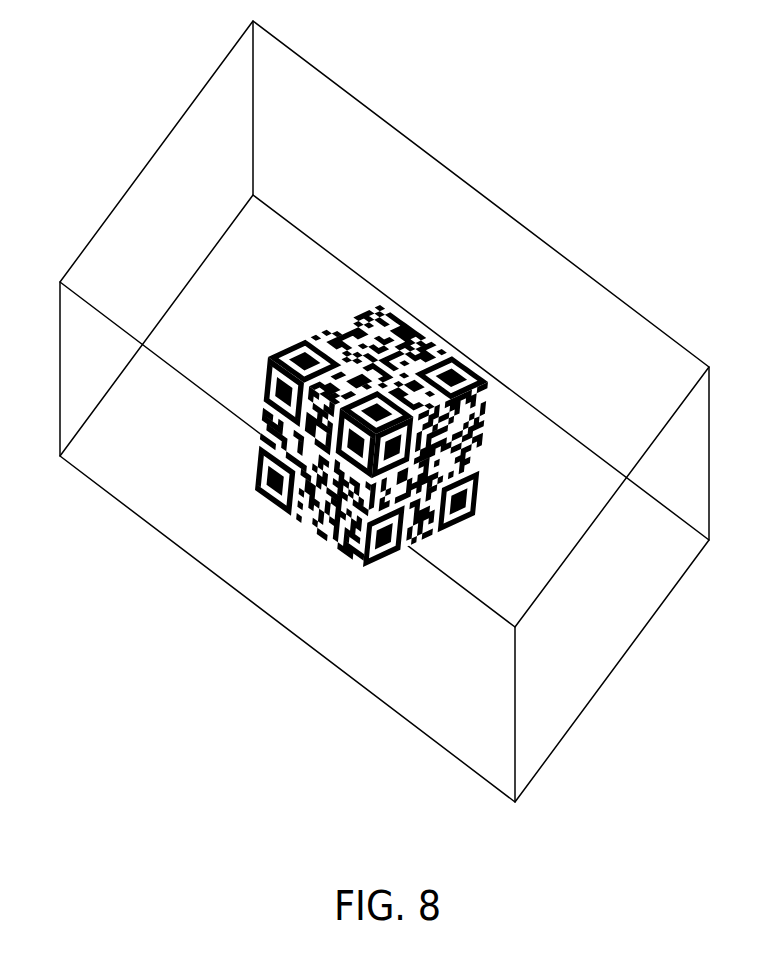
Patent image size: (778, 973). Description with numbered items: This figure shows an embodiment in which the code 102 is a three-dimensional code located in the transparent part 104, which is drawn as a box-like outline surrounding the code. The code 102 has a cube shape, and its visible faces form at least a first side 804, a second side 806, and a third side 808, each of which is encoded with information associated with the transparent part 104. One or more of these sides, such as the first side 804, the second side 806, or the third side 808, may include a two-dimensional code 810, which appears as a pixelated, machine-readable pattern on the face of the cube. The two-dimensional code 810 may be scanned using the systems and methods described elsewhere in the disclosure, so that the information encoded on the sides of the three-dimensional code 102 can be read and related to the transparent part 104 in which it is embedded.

The transparent part 104 is at (343, 87).
The code 102 is at (381, 419).
The third side 808 is at (418, 325).
The first side 804 is at (312, 505).
The second side 806 is at (453, 474).
The two-dimensional code 810 is at (477, 466).